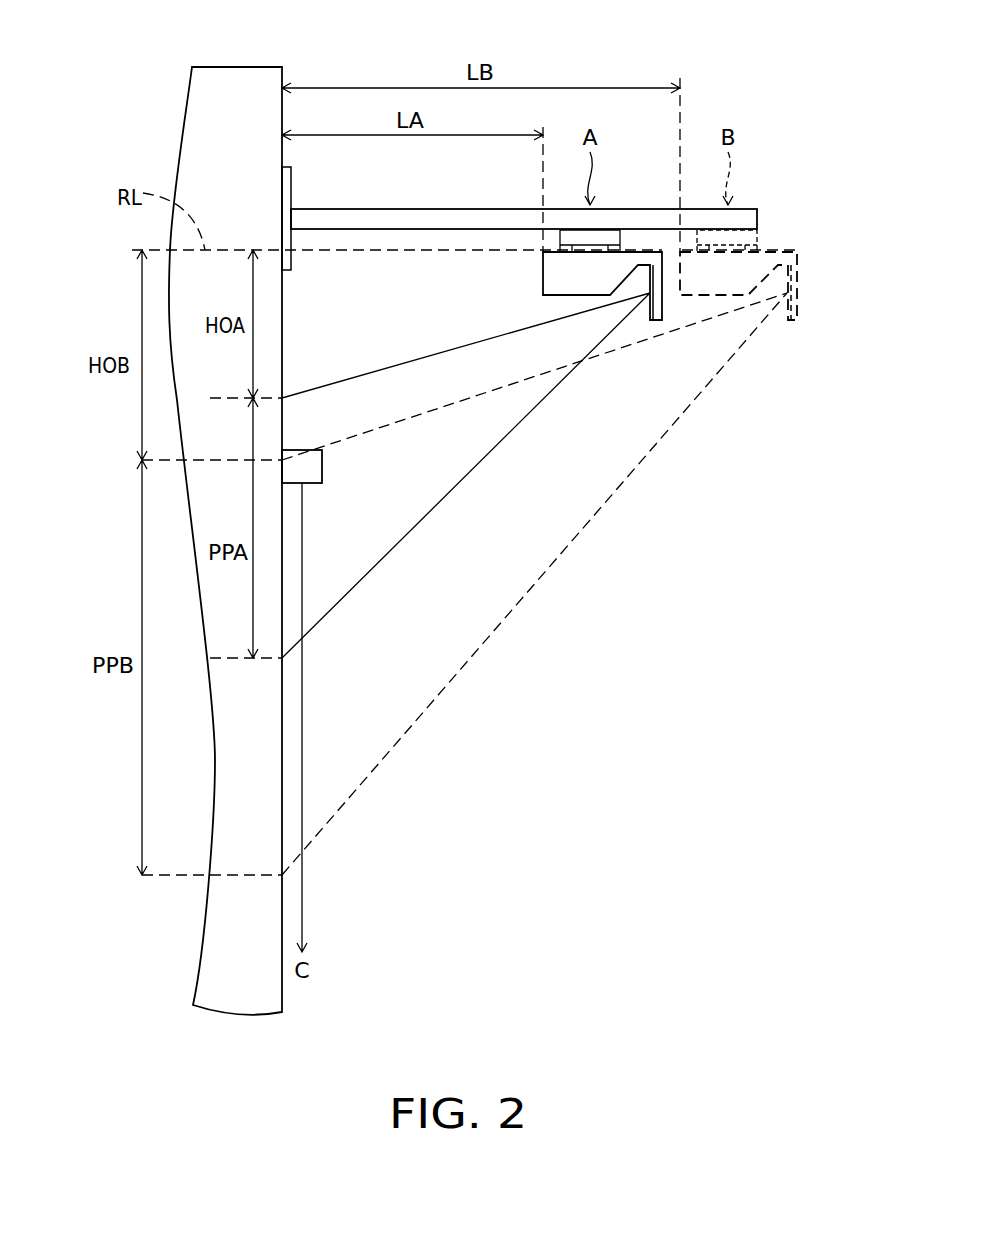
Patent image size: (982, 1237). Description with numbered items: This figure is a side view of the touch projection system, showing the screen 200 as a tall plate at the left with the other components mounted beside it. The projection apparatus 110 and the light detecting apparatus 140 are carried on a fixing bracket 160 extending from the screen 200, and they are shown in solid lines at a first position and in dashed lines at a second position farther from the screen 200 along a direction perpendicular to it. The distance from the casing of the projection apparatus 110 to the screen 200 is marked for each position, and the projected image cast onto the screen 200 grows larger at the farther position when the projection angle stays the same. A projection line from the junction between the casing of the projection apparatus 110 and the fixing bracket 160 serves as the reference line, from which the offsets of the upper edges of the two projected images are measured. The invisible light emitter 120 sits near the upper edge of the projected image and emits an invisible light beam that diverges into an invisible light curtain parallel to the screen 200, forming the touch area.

The screen 200 is at (283, 45).
The projection apparatus 110 is at (557, 273).
The invisible light emitter 120 is at (318, 470).
The light detecting apparatus 140 is at (655, 320).
The fixing bracket 160 is at (752, 222).